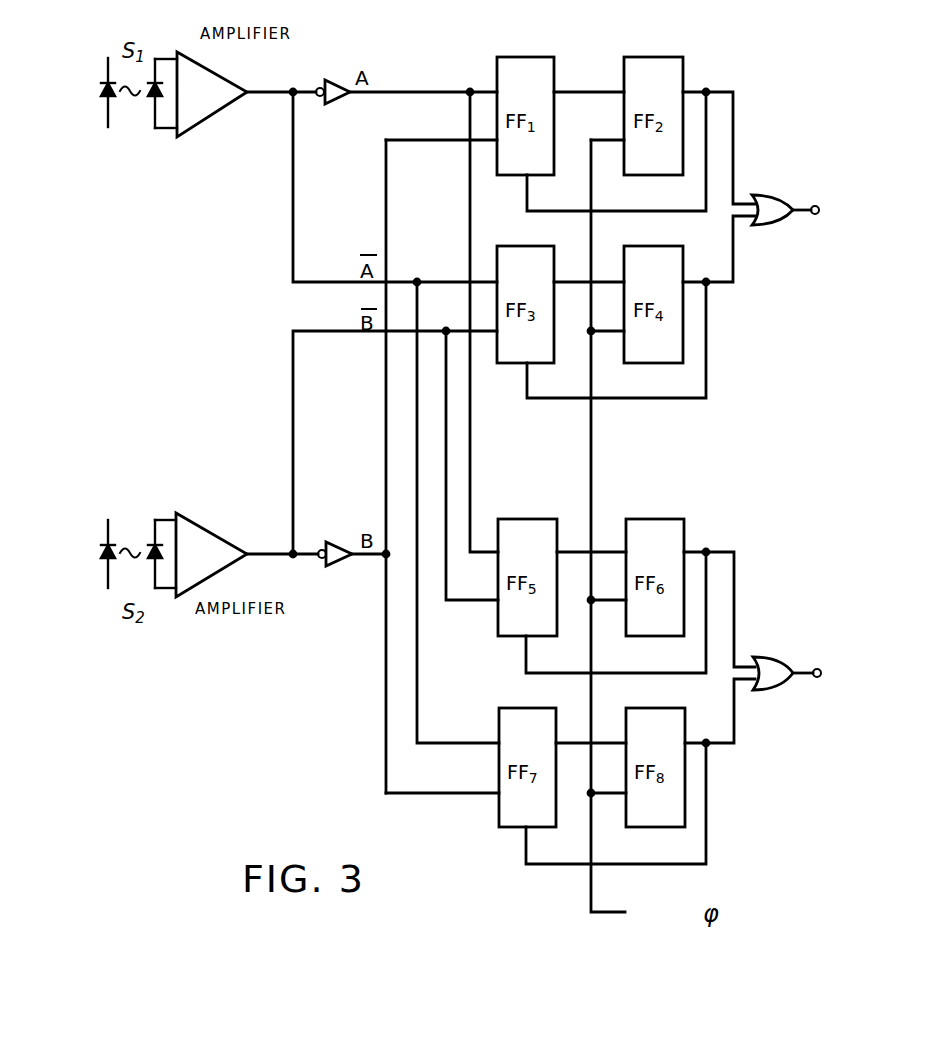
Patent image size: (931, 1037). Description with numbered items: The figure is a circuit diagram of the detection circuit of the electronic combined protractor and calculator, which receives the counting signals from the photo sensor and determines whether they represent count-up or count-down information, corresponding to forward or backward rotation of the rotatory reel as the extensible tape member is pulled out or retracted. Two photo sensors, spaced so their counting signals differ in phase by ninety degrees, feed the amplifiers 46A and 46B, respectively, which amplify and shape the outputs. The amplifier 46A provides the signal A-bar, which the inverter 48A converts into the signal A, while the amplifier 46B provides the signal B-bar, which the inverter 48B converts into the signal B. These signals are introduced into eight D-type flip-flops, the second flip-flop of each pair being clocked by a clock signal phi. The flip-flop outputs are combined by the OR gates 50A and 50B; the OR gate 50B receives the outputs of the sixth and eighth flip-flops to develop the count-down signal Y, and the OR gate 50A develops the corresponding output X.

The amplifier 46A is at (198, 128).
The amplifier 46B is at (200, 521).
The inverter 48A is at (336, 104).
The inverter 48B is at (332, 538).
The OR gate 50A is at (766, 228).
The OR gate 50B is at (776, 652).